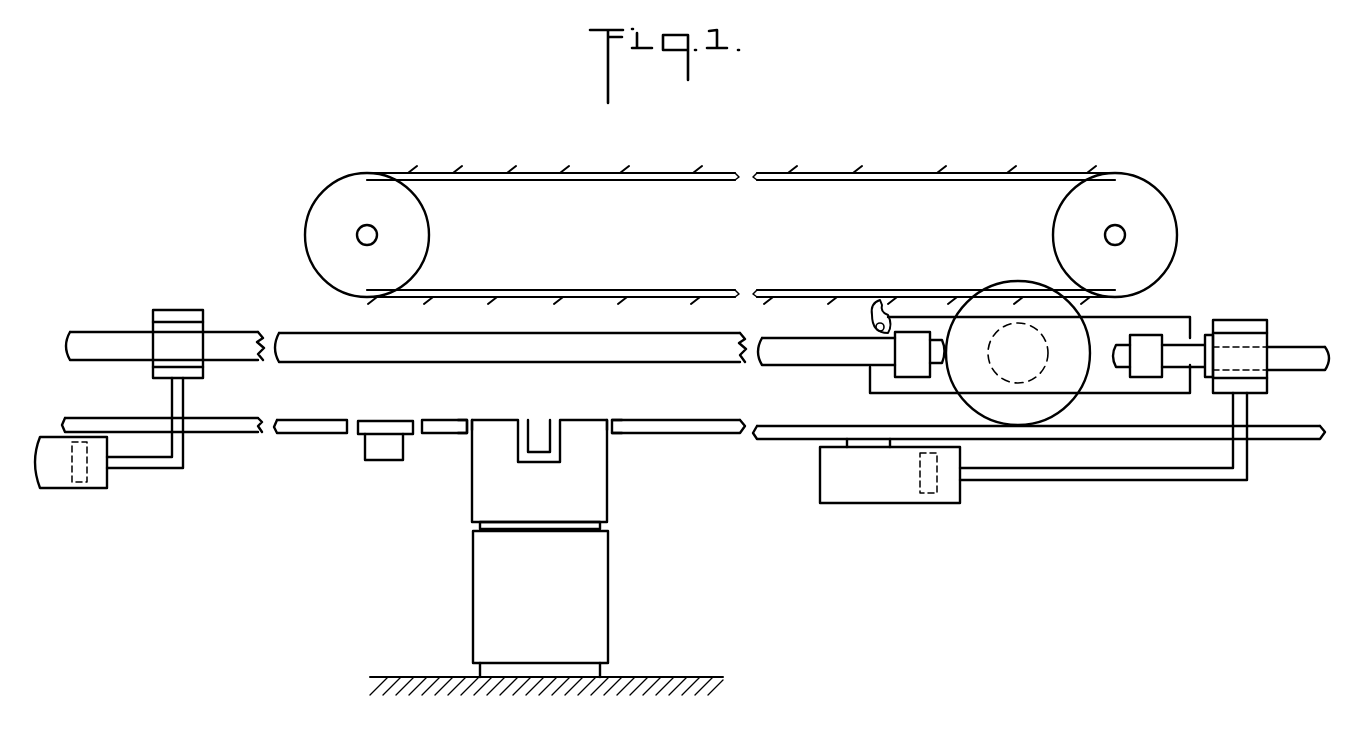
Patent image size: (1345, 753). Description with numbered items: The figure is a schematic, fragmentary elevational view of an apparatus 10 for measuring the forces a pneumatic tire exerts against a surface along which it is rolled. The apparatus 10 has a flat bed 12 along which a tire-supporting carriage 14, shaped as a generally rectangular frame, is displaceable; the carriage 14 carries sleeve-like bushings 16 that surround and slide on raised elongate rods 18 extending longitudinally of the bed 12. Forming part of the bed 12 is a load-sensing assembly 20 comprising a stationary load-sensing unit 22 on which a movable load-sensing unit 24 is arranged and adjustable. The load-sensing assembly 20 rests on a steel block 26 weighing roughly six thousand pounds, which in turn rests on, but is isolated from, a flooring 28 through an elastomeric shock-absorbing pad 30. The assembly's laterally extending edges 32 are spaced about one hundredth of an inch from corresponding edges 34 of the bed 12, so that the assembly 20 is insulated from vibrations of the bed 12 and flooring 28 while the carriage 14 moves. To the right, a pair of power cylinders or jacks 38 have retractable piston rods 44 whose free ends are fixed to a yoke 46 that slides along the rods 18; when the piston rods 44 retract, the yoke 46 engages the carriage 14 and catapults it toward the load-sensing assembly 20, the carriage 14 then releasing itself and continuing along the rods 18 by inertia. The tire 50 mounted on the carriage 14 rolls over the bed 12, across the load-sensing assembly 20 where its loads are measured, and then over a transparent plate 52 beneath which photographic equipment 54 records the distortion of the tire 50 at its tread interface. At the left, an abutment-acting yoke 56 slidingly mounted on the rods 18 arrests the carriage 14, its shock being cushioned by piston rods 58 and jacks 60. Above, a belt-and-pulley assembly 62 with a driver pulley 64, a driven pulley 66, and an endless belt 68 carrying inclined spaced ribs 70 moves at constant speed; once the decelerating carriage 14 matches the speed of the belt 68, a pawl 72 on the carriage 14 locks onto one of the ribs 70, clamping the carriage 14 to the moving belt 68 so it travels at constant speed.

The apparatus 10 is at (392, 121).
The flat bed 12 is at (225, 433).
The tire-supporting carriage 14 is at (1011, 329).
The sleeve-like bushings 16 is at (913, 372).
The raised elongate rods 18 is at (122, 338).
The load-sensing assembly 20 is at (531, 525).
The stationary load-sensing unit 22 is at (573, 447).
The movable load-sensing unit 24 is at (536, 420).
The steel block 26 is at (475, 572).
The flooring 28 is at (395, 677).
The elastomeric shock-absorbing pad 30 is at (602, 673).
The edges of the load-sensing assembly 32 is at (475, 420).
The laterally extending edges of the bed 34 is at (467, 426).
The power cylinders or jacks 38 is at (870, 503).
The piston rods 44 is at (1127, 480).
The yoke 46 is at (1262, 390).
The tire 50 is at (1018, 281).
The transparent plate 52 is at (373, 421).
The photographic equipment 54 is at (370, 460).
The abutment-acting yoke 56 is at (200, 312).
The piston rods 58 is at (160, 469).
The power cylinders or jacks 60 is at (62, 490).
The belt-and-pulley assembly 62 is at (744, 208).
The driver pulley 64 is at (1158, 202).
The driven pulley 66 is at (322, 208).
The endless belt 68 is at (788, 181).
The ribs 70 is at (510, 168).
The pawl 72 is at (870, 318).